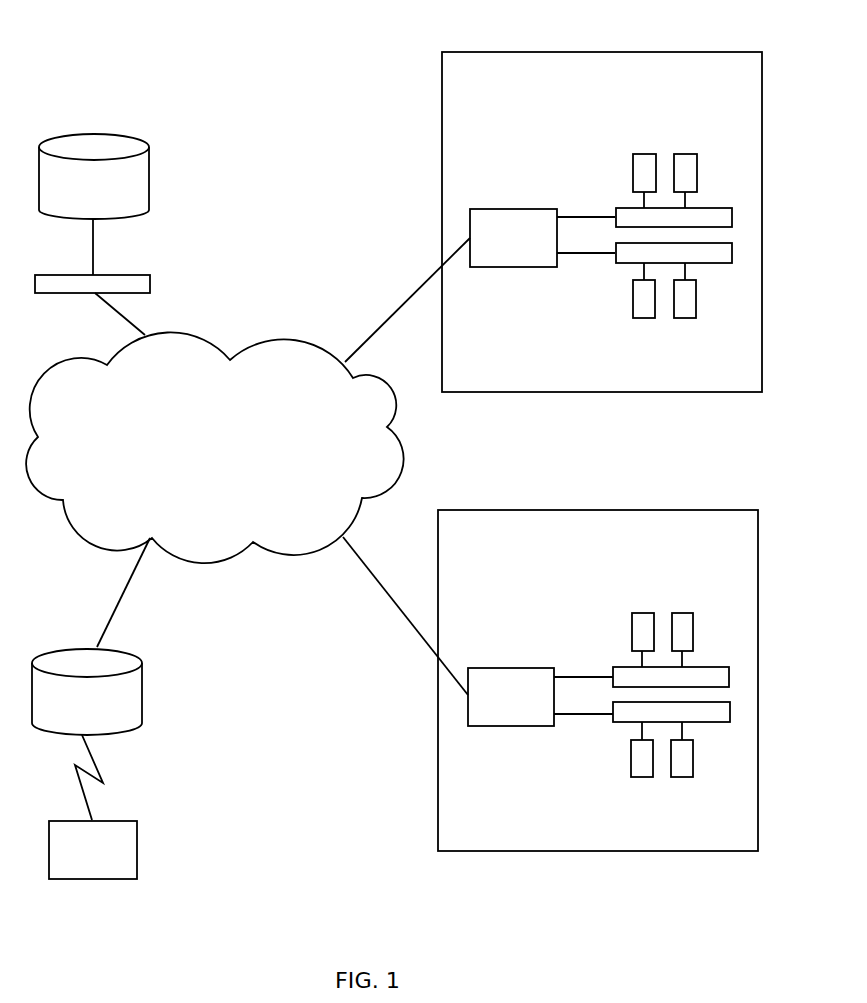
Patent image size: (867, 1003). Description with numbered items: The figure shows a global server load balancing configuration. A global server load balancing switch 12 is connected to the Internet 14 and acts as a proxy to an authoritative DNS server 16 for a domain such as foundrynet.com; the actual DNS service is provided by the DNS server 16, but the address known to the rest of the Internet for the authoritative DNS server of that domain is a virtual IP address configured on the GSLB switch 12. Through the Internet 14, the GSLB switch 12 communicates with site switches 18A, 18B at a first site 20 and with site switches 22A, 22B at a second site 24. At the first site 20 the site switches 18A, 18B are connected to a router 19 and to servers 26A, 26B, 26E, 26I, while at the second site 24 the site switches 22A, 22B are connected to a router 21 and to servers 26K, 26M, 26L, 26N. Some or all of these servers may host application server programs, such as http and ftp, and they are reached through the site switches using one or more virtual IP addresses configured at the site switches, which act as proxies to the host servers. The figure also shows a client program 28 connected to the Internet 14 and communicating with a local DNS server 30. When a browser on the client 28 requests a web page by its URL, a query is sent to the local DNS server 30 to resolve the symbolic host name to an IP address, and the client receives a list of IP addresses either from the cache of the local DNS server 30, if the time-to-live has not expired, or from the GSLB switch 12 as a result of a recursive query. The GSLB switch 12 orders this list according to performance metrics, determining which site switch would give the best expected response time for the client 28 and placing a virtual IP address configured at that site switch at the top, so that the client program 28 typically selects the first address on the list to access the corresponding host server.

The global server load balancing switch 12 is at (152, 283).
The Internet 14 is at (80, 518).
The authoritative DNS server 16 is at (92, 148).
The site switch 18A is at (732, 216).
The site switch 18B is at (732, 251).
The router 19 is at (478, 223).
The site 20 is at (731, 62).
The router 21 is at (480, 719).
The site switch 22A is at (729, 676).
The site switch 22B is at (730, 711).
The site 24 is at (740, 522).
The server 26A is at (646, 154).
The server 26B is at (697, 172).
The server 26E is at (697, 298).
The server 26I is at (645, 318).
The server 26K is at (642, 613).
The server 26L is at (693, 757).
The server 26M is at (693, 631).
The server 26N is at (643, 777).
The client program 28 is at (137, 848).
The local DNS server 30 is at (134, 688).